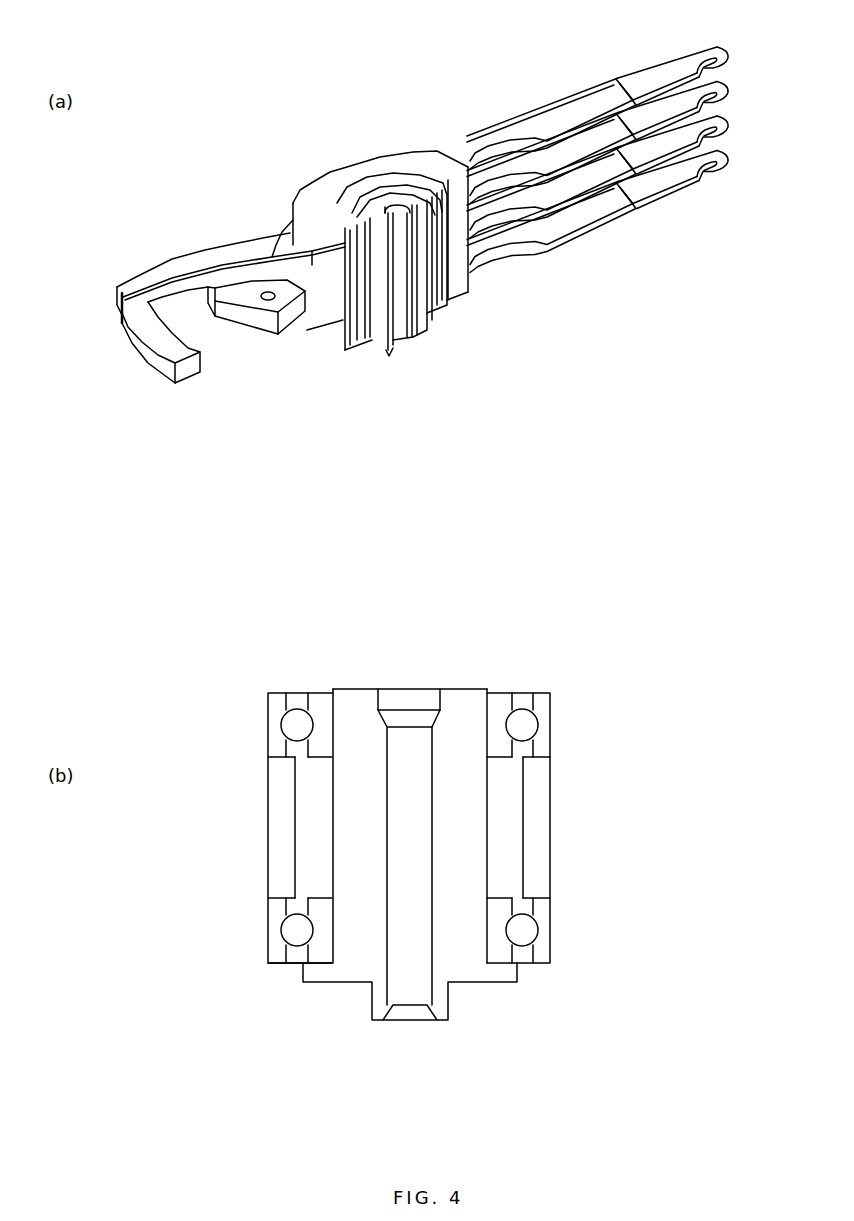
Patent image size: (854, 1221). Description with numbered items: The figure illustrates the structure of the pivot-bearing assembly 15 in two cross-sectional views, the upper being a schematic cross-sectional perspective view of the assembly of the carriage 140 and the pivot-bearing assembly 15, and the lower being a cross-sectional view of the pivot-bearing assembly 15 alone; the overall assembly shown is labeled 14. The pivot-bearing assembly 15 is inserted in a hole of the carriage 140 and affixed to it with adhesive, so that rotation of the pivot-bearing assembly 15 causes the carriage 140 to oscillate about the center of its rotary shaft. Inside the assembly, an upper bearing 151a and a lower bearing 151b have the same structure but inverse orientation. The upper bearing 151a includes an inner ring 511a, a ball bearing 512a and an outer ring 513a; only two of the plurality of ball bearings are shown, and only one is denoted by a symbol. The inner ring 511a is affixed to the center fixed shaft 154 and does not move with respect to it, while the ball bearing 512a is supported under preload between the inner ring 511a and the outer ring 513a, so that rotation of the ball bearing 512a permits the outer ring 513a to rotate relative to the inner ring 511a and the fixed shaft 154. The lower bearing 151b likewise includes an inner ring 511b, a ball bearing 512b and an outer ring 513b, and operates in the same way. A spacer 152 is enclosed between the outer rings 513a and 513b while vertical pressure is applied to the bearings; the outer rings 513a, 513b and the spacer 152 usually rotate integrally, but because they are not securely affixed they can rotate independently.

The connector assembly 14 is at (471, 51).
The pivot-bearing assembly 15 is at (384, 179).
The carriage 140 is at (615, 241).
The fixed shaft 154 is at (368, 688).
The upper bearing 151a is at (575, 674).
The lower bearing 151b is at (557, 963).
The spacer 152 is at (268, 842).
The inner ring 511a is at (533, 668).
The inner ring 511b is at (305, 950).
The ball bearing 512a is at (297, 708).
The ball bearing 512b is at (281, 930).
The outer ring 513a is at (548, 728).
The outer ring 513b is at (550, 938).